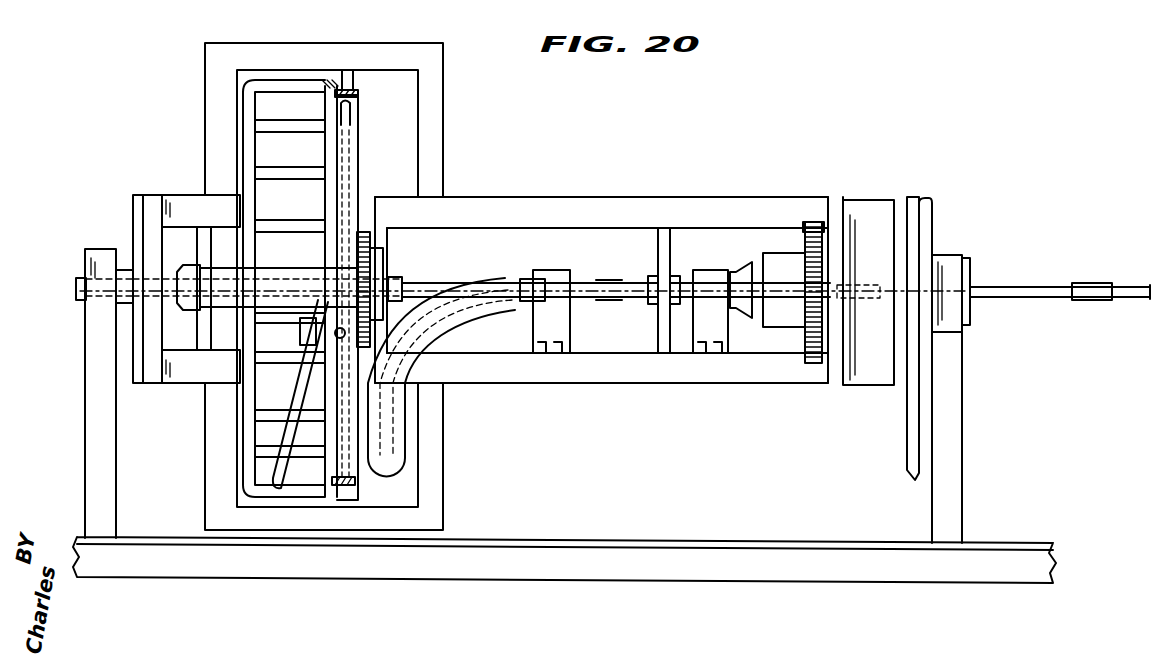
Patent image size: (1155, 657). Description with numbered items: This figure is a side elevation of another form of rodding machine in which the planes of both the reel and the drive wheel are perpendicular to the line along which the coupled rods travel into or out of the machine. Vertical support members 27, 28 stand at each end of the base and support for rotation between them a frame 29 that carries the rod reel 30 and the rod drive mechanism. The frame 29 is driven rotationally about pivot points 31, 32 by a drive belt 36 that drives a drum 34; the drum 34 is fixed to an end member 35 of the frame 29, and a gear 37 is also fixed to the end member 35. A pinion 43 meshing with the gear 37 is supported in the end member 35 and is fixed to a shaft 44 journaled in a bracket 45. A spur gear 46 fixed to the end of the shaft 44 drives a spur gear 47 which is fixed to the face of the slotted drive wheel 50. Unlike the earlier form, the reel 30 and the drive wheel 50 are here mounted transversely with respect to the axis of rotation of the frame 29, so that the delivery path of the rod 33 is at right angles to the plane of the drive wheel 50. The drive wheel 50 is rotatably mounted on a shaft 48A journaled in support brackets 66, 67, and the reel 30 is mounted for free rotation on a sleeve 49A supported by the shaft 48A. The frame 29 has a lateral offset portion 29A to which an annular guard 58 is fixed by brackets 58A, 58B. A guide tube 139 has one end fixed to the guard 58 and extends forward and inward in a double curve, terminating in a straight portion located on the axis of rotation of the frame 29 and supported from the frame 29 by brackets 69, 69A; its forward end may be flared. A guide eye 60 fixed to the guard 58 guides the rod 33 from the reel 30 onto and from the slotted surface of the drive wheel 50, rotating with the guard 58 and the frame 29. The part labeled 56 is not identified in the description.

The vertical support member 27 is at (113, 476).
The vertical support member 28 is at (944, 444).
The frame 29 is at (628, 213).
The lateral offset portion 29A is at (477, 448).
The rod reel 30 is at (230, 142).
The pivot point 31 is at (76, 288).
The pivot point 32 is at (968, 268).
The rod 33 is at (270, 498).
The drum 34 is at (868, 212).
The end member 35 is at (838, 210).
The drive belt 36 is at (906, 440).
The gear 37 is at (808, 240).
The pinion 43 is at (814, 293).
The shaft 44 is at (438, 292).
The bracket 45 is at (663, 322).
The spur gear 46 is at (386, 280).
The spur gear 47 is at (366, 231).
The shaft 48A is at (417, 274).
The sleeve 49A is at (230, 266).
The slotted drive wheel 50 is at (367, 127).
The sleeve 56 is at (1090, 285).
The annular guard 58 is at (362, 92).
The bracket 58A is at (346, 82).
The bracket 58B is at (350, 490).
The guide eye 60 is at (292, 335).
The support bracket 66 is at (207, 337).
The support bracket 67 is at (388, 255).
The bracket 69 is at (562, 322).
The bracket 69A is at (694, 313).
The guide tube 139 is at (609, 280).